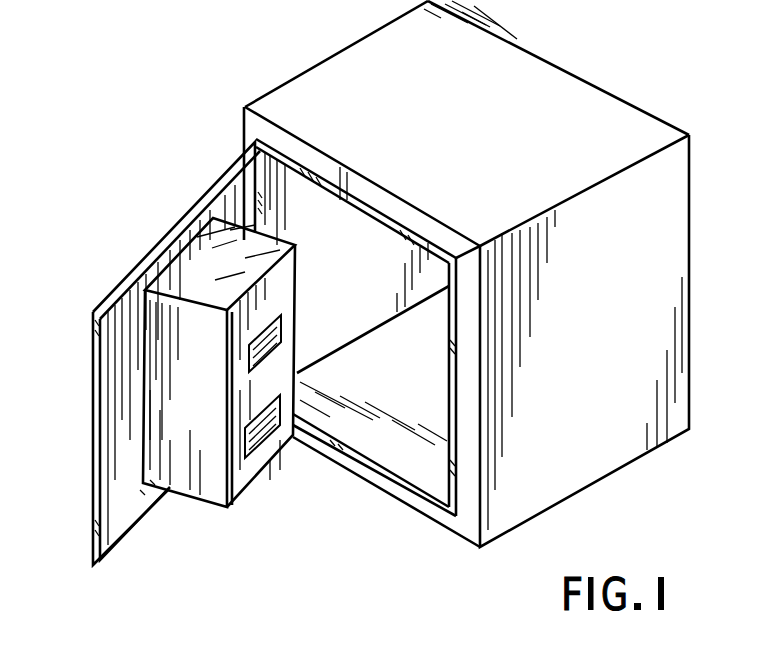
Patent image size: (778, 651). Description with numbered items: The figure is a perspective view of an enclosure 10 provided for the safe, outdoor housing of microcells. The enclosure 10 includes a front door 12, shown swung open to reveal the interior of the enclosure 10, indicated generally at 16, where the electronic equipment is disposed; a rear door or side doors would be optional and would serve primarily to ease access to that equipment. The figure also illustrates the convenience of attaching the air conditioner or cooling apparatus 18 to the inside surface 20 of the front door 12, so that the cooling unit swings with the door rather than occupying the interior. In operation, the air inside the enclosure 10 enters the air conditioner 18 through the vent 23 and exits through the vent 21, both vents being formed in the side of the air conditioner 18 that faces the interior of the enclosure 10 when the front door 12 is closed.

The enclosure 10 is at (613, 75).
The front door 12 is at (149, 391).
The interior of the enclosure 16 is at (422, 383).
The air conditioner or cooling apparatus 18 is at (255, 409).
The inside surface 20 is at (118, 512).
The vent 21 is at (262, 435).
The vent 23 is at (288, 332).